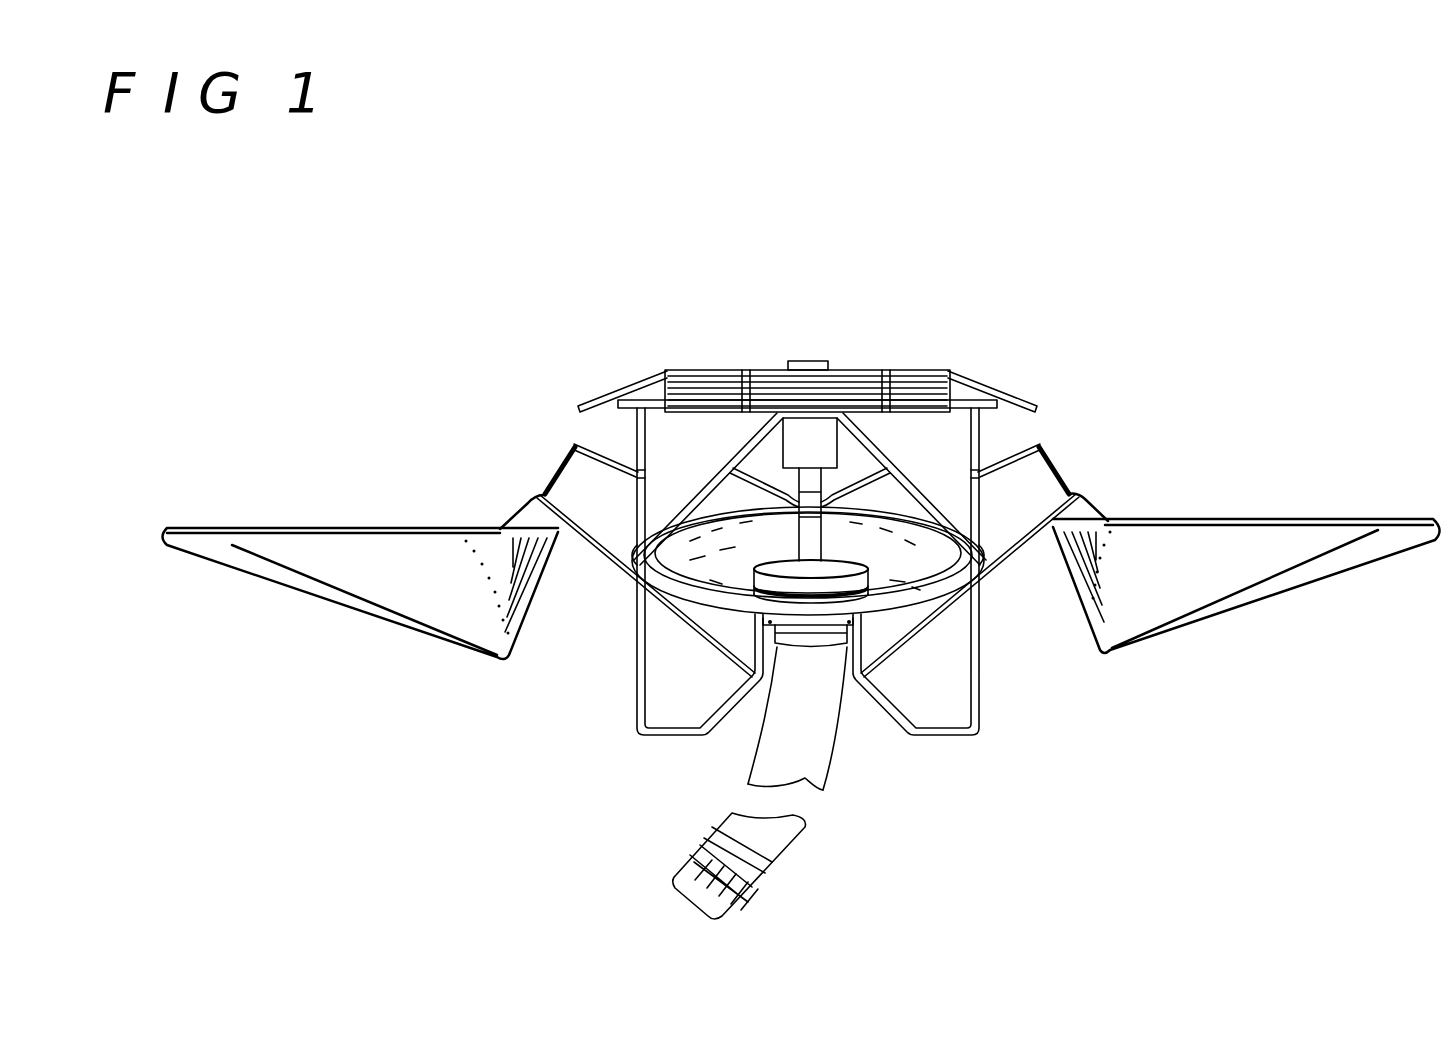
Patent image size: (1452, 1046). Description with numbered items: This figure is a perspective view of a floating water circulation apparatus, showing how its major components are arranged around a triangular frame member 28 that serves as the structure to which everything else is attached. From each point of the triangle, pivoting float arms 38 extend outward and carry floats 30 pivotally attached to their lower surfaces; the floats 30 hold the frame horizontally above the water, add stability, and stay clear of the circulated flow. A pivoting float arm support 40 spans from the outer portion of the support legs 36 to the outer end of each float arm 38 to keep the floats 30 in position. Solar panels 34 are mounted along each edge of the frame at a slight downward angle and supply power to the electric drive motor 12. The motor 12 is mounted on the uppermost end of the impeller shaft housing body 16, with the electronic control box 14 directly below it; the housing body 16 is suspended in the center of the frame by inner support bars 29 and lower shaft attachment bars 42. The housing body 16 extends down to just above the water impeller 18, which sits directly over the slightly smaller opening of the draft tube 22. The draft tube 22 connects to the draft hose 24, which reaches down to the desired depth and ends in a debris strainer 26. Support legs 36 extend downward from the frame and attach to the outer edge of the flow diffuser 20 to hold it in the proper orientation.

The electric drive motor 12 is at (788, 356).
The electronic control box 14 is at (803, 437).
The impeller shaft housing body 16 is at (792, 532).
The water impeller 18 is at (748, 578).
The flow diffuser 20 is at (880, 568).
The draft tube 22 is at (832, 626).
The draft hose 24 is at (805, 692).
The debris strainer 26 is at (682, 859).
The triangular frame member 28 is at (972, 403).
The inner support bars 29 is at (907, 480).
The floats 30 is at (360, 528).
The solar panels 34 is at (657, 383).
The support legs 36 is at (932, 740).
The pivoting float arms 38 is at (510, 503).
The pivoting float arm support 40 is at (548, 449).
The lower shaft attachment bars 42 is at (908, 585).